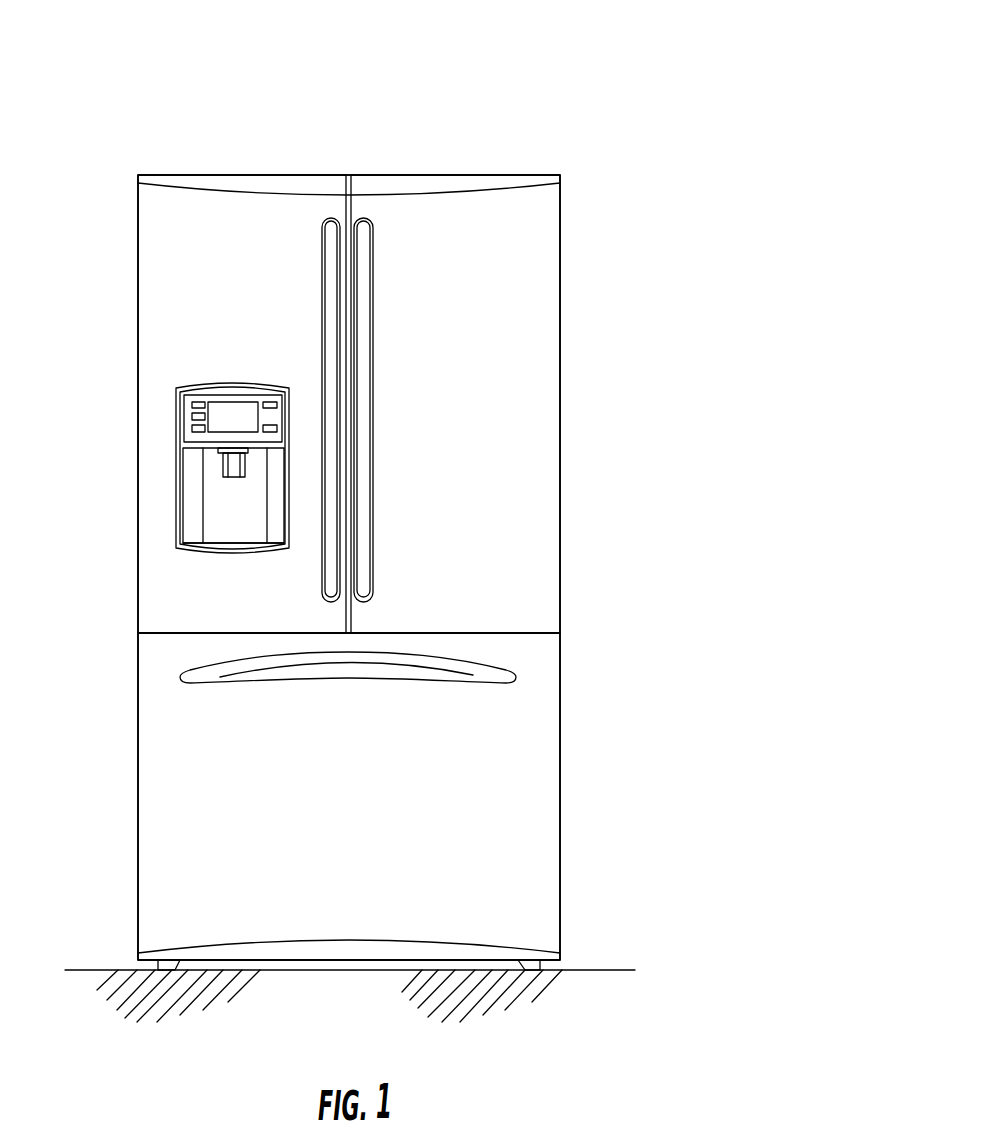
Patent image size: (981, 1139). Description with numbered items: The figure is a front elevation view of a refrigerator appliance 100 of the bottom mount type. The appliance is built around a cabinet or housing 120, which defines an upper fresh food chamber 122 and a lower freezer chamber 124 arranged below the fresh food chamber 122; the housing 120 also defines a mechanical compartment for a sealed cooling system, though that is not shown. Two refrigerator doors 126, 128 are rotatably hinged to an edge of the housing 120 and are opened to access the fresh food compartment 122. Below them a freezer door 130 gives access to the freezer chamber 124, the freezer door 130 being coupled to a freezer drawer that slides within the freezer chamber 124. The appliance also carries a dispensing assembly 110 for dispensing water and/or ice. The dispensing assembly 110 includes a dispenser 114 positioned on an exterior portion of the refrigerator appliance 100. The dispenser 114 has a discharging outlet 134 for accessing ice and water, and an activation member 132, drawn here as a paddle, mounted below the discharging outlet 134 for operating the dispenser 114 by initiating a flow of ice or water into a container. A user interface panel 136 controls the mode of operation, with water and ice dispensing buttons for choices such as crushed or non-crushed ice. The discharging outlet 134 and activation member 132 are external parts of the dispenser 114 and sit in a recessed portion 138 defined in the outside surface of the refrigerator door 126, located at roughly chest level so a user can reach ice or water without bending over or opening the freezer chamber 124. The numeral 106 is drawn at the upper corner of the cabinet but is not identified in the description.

The refrigerator appliance 100 is at (360, 486).
The cabinet 106 is at (563, 178).
The dispensing assembly 110 is at (178, 462).
The dispenser 114 is at (227, 515).
The housing 120 is at (138, 869).
The fresh food chamber 122 is at (520, 402).
The freezer chamber 124 is at (523, 743).
The refrigerator door 126 is at (172, 265).
The refrigerator door 128 is at (532, 300).
The freezer door 130 is at (530, 843).
The activation member 132 is at (223, 469).
The discharging outlet 134 is at (233, 462).
The user interface panel 136 is at (187, 413).
The recessed portion 138 is at (248, 522).